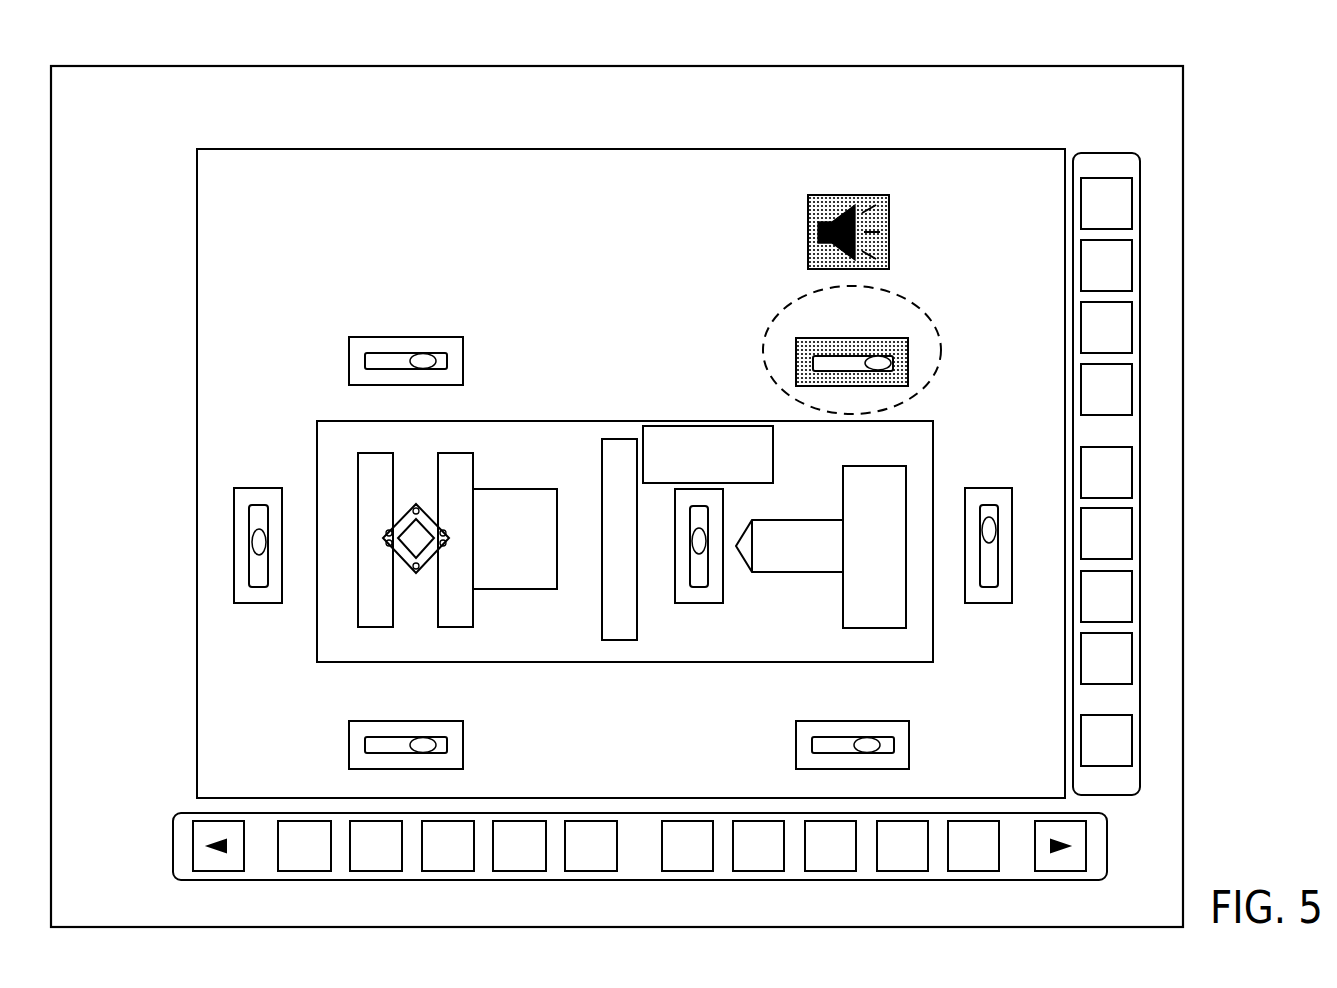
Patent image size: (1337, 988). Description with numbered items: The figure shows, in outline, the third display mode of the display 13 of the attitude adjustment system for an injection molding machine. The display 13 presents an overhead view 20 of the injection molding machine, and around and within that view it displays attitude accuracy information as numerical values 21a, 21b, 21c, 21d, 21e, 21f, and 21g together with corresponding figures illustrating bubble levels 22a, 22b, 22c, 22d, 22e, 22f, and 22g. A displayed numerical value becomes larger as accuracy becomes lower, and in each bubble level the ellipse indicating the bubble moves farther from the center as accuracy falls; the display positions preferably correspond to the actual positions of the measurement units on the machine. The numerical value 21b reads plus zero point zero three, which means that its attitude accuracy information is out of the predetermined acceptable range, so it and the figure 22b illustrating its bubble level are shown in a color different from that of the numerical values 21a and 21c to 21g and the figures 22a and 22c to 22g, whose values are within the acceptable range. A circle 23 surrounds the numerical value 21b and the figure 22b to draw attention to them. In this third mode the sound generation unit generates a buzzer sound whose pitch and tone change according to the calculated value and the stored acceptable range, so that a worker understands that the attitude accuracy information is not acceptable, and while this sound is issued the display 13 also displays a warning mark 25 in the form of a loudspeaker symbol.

The display 13 is at (980, 66).
The overhead view 20 is at (540, 416).
The numerical value 21a is at (447, 300).
The numerical value 21b is at (905, 315).
The numerical value 21c is at (255, 440).
The numerical value 21d is at (697, 426).
The numerical value 21e is at (1008, 440).
The numerical value 21f is at (461, 695).
The numerical value 21g is at (905, 695).
The figure illustrating a bubble level 22a is at (463, 358).
The figure illustrating a bubble level 22b is at (908, 352).
The figure illustrating a bubble level 22c is at (252, 604).
The figure illustrating a bubble level 22d is at (700, 603).
The figure illustrating a bubble level 22e is at (985, 605).
The figure illustrating a bubble level 22f is at (463, 745).
The figure illustrating a bubble level 22g is at (910, 745).
The circle 23 is at (775, 330).
The warning mark 25 is at (808, 228).